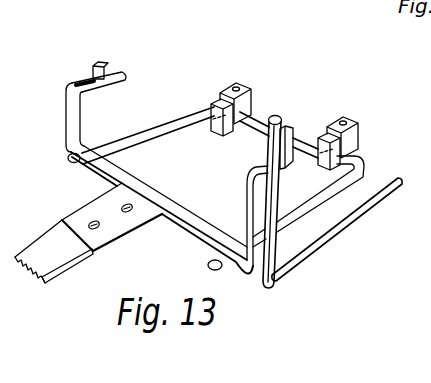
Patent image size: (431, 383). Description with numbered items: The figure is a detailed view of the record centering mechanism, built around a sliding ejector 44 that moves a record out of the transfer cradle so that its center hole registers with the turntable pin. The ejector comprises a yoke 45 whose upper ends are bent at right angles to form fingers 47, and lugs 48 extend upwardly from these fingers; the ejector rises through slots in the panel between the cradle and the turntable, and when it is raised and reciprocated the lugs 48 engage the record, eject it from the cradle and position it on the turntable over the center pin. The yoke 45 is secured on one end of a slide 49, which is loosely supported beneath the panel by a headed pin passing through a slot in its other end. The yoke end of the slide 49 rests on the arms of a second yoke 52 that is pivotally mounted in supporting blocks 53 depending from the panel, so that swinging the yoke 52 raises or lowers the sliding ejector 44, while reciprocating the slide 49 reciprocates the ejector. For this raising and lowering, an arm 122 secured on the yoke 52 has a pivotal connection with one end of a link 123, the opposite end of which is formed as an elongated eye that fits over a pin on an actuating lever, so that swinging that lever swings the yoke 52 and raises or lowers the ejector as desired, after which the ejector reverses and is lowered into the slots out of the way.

The sliding ejector 44 is at (193, 178).
The yoke 45 is at (72, 128).
The fingers 47 is at (127, 75).
The lugs 48 is at (106, 63).
The slide 49 is at (43, 244).
The yoke 52 is at (156, 131).
The supporting blocks 53 is at (354, 134).
The arm 122 is at (263, 286).
The link 123 is at (333, 236).